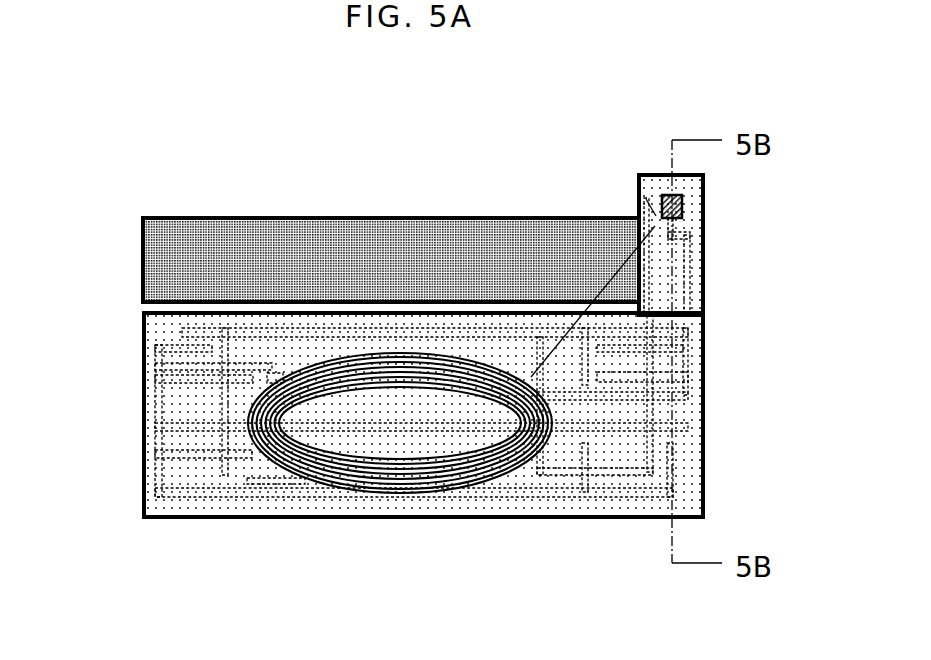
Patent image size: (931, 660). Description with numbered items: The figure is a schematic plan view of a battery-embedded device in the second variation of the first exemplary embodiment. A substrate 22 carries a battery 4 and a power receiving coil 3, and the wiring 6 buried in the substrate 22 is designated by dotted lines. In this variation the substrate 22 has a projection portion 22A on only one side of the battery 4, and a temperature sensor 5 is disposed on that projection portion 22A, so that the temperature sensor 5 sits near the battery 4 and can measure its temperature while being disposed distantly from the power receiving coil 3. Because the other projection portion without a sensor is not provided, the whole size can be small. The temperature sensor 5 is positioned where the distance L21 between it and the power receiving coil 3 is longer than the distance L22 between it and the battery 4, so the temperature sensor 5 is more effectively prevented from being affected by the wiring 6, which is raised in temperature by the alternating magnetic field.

The power receiving coil 3 is at (398, 496).
The battery 4 is at (406, 238).
The temperature sensor 5 is at (687, 207).
The wiring 6 is at (607, 402).
The substrate 22 is at (190, 519).
The projection portion 22A is at (696, 253).
The distance L21 is at (614, 288).
The distance L22 is at (640, 194).